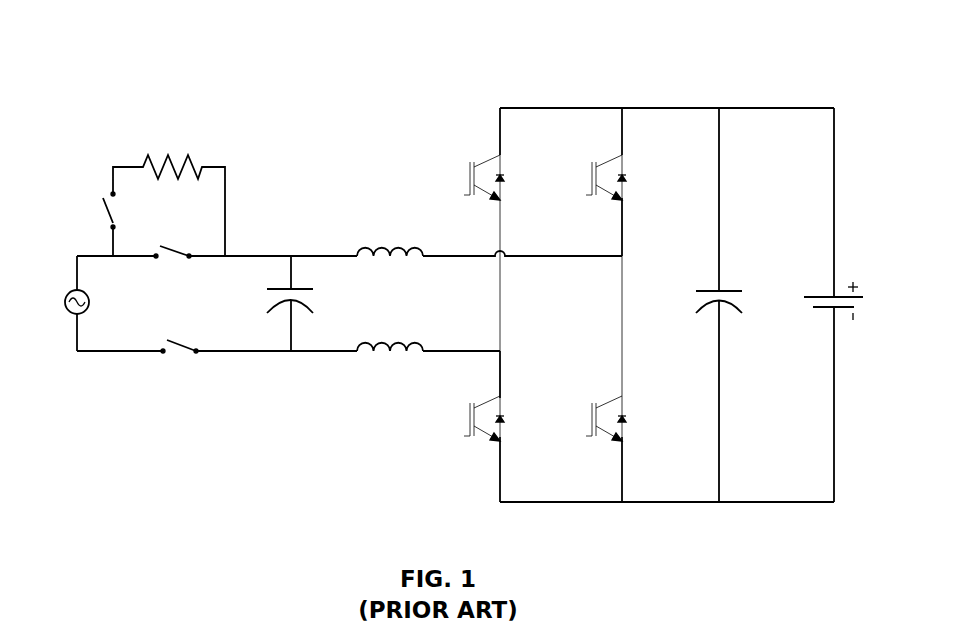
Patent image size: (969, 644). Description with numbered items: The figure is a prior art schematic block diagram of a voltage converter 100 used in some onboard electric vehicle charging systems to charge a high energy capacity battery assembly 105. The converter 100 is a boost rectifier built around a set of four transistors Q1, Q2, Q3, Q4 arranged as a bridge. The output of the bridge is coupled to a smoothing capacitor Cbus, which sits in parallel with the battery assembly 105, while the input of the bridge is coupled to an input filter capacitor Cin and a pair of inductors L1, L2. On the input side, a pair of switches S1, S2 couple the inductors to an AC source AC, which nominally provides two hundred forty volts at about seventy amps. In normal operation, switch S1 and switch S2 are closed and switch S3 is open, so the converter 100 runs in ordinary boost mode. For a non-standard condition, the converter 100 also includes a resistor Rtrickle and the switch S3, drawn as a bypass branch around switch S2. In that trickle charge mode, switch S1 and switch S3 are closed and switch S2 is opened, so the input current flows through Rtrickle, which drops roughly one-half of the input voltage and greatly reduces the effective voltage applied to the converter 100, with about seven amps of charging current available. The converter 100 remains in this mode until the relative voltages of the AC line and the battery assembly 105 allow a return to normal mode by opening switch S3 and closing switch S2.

The voltage converter 100 is at (322, 70).
The battery assembly 105 is at (817, 272).
The AC source AC is at (61, 303).
The resistor Rtrickle is at (160, 142).
The switch S1 is at (175, 372).
The switch S2 is at (167, 273).
The switch S3 is at (92, 205).
The input filter capacitor Cin is at (257, 297).
The inductor L1 is at (390, 240).
The inductor L2 is at (390, 323).
The transistor Q1 is at (488, 155).
The transistor Q2 is at (472, 455).
The transistor Q3 is at (603, 155).
The transistor Q4 is at (603, 447).
The smoothing capacitor Cbus is at (737, 322).